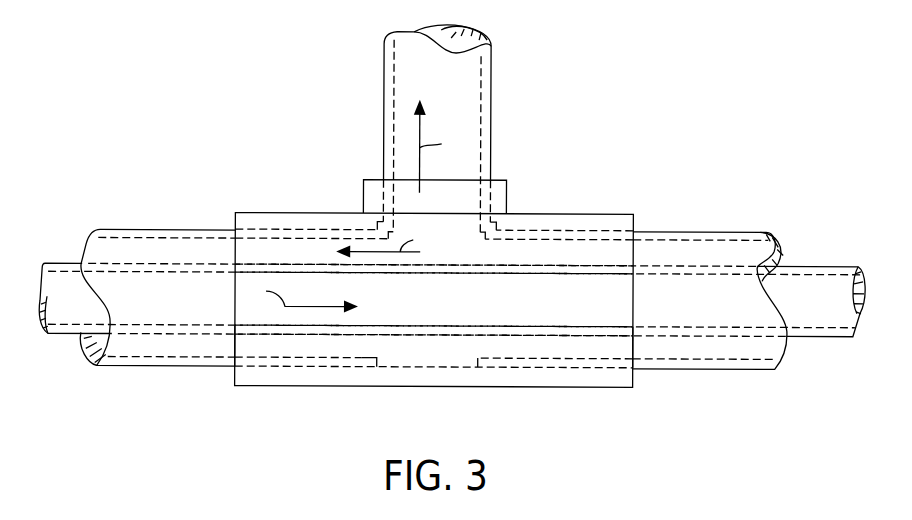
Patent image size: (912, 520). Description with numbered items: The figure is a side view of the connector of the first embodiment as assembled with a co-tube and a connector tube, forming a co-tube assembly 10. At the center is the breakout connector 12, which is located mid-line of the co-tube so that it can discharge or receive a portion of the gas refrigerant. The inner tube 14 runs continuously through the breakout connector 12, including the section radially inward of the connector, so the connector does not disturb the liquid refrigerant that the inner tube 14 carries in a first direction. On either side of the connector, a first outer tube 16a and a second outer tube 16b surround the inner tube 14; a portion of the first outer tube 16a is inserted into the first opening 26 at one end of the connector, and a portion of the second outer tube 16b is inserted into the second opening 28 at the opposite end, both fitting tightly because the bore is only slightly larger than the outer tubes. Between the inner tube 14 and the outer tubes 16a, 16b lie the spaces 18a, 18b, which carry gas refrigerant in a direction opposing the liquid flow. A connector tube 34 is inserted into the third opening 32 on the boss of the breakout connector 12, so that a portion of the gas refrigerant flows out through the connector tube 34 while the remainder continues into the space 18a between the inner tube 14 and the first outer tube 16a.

The co-tube assembly 10 is at (635, 116).
The breakout connector 12 is at (547, 214).
The inner tube 14 is at (55, 265).
The first outer tube 16a is at (133, 230).
The second outer tube 16b is at (687, 231).
The space 18a is at (167, 297).
The space 18b is at (704, 300).
The first opening 26 is at (235, 343).
The second opening 28 is at (633, 350).
The third opening 32 is at (443, 180).
The connector tube 34 is at (492, 92).